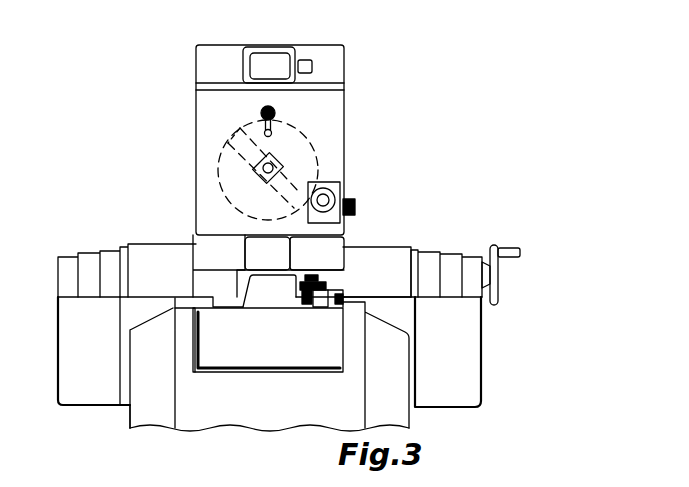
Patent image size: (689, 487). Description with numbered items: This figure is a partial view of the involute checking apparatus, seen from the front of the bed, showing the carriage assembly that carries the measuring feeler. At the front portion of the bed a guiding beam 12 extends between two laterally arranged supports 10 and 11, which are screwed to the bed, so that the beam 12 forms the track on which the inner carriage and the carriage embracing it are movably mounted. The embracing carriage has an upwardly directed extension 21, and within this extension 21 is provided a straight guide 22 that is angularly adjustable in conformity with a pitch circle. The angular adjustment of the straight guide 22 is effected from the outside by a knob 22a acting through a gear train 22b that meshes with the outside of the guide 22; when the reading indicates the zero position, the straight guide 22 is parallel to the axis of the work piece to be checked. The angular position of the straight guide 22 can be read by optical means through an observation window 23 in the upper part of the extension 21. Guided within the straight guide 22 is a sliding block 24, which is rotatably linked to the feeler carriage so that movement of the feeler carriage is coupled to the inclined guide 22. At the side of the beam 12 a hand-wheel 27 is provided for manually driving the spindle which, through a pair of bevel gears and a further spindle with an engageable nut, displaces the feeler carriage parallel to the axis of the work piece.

The support 10 is at (82, 348).
The support 11 is at (467, 352).
The guiding beam 12 is at (362, 258).
The upwardly directed extension 21 is at (333, 103).
The straight guide 22 is at (240, 148).
The knob 22a is at (356, 206).
The gear train 22b is at (330, 192).
The observation window 23 is at (272, 60).
The sliding block 24 is at (270, 160).
The hand-wheel 27 is at (498, 270).